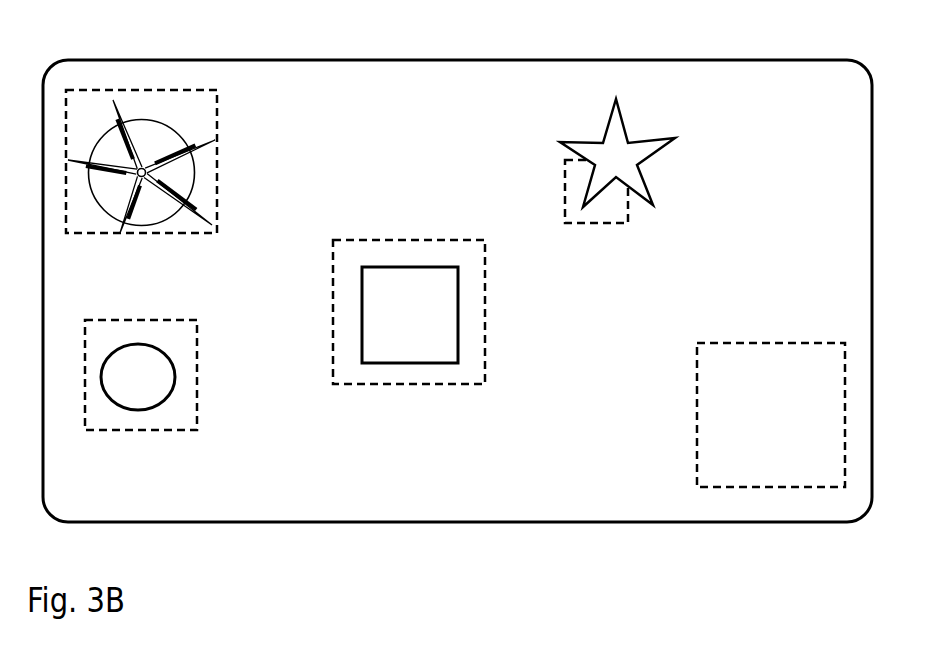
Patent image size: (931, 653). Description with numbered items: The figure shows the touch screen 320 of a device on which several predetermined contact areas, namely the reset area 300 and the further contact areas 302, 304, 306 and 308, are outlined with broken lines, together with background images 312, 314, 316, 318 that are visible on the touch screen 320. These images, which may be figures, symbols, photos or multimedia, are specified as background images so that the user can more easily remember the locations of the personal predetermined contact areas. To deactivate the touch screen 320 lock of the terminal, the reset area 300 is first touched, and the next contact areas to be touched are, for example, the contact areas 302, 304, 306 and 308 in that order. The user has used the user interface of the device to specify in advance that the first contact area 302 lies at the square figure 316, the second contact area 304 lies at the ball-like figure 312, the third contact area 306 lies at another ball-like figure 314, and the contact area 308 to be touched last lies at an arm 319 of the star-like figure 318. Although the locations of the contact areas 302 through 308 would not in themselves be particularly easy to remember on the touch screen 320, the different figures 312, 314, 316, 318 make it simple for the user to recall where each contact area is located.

The reset area 300 is at (728, 487).
The first contact area 302 is at (360, 384).
The second contact area 304 is at (100, 430).
The third contact area 306 is at (97, 90).
The contact area to be touched last 308 is at (590, 223).
The ball-like figure 312 is at (138, 345).
The another ball-like figure 314 is at (195, 165).
The square figure 316 is at (383, 267).
The star-like figure 318 is at (653, 157).
The arm of the star-like figure 319 is at (587, 187).
The touch screen 320 is at (275, 60).